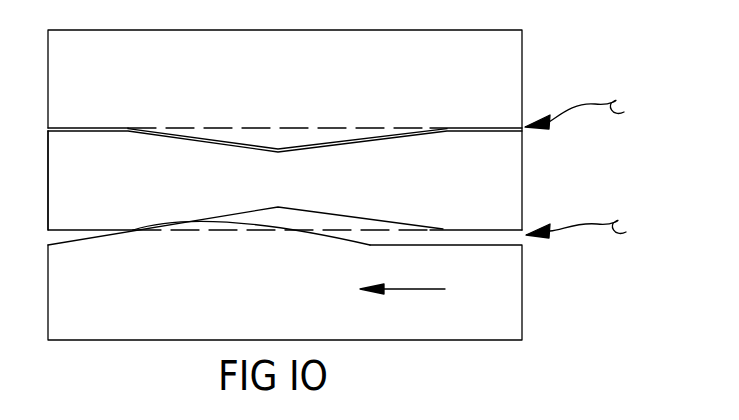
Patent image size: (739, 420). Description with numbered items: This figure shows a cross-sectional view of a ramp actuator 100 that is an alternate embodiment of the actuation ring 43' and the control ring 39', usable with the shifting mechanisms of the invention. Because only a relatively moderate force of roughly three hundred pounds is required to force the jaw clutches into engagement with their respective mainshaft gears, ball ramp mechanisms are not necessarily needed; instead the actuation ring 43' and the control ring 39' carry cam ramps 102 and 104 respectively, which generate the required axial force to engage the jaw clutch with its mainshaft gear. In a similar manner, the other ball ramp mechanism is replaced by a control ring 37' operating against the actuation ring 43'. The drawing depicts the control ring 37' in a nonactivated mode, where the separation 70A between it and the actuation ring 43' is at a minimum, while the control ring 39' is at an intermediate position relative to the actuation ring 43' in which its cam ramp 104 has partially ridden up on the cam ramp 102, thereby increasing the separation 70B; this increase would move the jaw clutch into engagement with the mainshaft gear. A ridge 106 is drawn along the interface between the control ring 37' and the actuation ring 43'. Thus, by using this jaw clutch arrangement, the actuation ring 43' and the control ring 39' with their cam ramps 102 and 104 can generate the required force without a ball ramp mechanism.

The control ring 37' is at (316, 130).
The control ring 39' is at (327, 292).
The actuation ring 43' is at (336, 180).
The separation 70A is at (596, 114).
The separation 70B is at (597, 232).
The forming assembly 100 is at (213, 143).
The cam ramp 102 is at (320, 210).
The cam ramp 104 is at (288, 231).
The ridge strip 106 is at (248, 143).